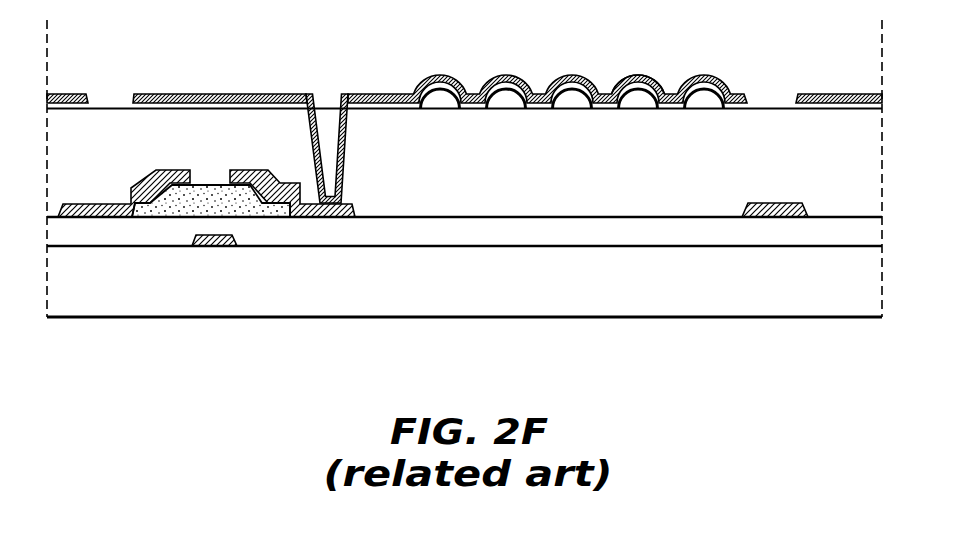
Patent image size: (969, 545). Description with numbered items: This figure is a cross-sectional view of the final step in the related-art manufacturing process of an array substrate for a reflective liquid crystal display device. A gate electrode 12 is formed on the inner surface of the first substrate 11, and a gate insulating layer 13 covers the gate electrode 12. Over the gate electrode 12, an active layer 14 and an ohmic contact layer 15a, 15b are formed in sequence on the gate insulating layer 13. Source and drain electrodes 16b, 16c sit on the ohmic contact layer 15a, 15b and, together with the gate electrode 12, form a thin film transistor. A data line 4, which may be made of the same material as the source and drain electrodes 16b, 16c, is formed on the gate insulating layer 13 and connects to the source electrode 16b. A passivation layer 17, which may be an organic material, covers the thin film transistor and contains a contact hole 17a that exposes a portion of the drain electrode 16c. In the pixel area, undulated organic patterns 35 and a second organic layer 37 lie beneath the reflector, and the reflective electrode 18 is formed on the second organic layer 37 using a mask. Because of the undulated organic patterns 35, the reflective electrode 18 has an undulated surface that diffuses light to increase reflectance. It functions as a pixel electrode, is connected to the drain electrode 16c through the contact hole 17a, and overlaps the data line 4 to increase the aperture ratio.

The data line 4 is at (773, 217).
The first substrate 11 is at (452, 357).
The gate electrode 12 is at (205, 248).
The gate insulating layer 13 is at (587, 230).
The active layer 14 is at (280, 210).
The ohmic contact layer 15a is at (192, 170).
The ohmic contact layer 15b is at (247, 168).
The source electrode 16b is at (148, 168).
The drain electrode 16c is at (293, 183).
The passivation layer 17 is at (110, 135).
The contact hole 17a is at (330, 104).
The reflective electrode 18 is at (75, 93).
The undulated organic patterns 35 is at (708, 100).
The second organic layer 37 is at (653, 77).